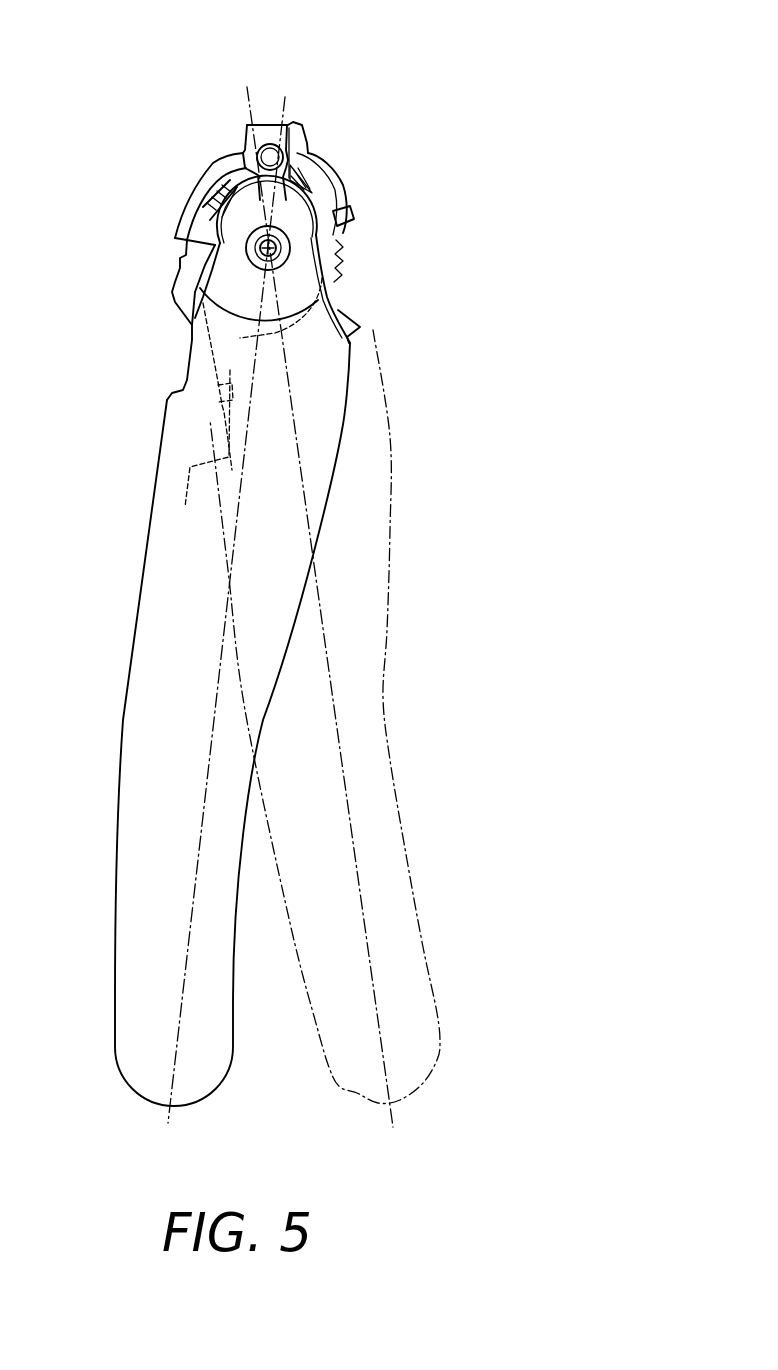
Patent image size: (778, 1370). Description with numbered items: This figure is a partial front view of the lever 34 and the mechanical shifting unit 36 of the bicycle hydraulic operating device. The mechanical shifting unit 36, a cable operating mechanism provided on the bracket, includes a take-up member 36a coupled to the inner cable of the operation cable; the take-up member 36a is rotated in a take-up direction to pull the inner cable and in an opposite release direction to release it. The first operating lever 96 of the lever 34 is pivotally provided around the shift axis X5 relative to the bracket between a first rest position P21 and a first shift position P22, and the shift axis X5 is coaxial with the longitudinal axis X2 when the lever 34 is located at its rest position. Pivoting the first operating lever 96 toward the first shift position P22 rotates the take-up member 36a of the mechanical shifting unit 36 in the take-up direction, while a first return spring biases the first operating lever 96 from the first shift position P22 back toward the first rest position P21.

The lever 34 is at (100, 506).
The mechanical shifting unit 36 is at (300, 97).
The take-up member 36a is at (180, 265).
The first operating lever 96 is at (160, 583).
The longitudinal axis X2 is at (268, 248).
The shift axis X5 is at (268, 248).
The first rest position P21 is at (216, 627).
The first shift position P22 is at (328, 622).